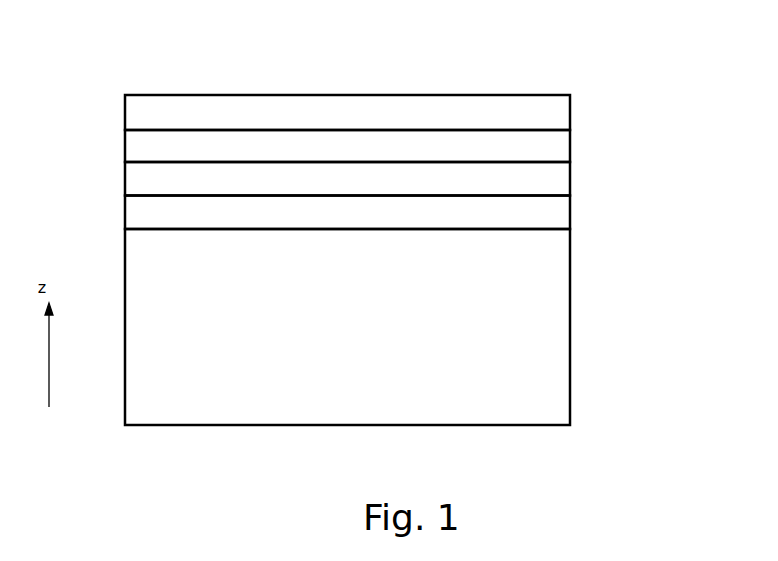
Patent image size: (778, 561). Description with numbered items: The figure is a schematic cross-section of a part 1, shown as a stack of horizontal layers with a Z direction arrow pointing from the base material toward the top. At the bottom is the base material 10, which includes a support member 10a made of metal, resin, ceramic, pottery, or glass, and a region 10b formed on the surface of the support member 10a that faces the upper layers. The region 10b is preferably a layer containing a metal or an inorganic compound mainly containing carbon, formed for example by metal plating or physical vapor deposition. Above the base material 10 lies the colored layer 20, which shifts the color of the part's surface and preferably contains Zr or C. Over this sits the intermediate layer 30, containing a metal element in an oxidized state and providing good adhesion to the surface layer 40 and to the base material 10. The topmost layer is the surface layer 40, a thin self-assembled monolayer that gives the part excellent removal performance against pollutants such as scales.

The part 1 is at (526, 26).
The base material 10 is at (425, 311).
The support member 10a is at (515, 300).
The region 10b is at (515, 212).
The colored layer 20 is at (515, 188).
The intermediate layer 30 is at (520, 149).
The surface layer 40 is at (515, 113).